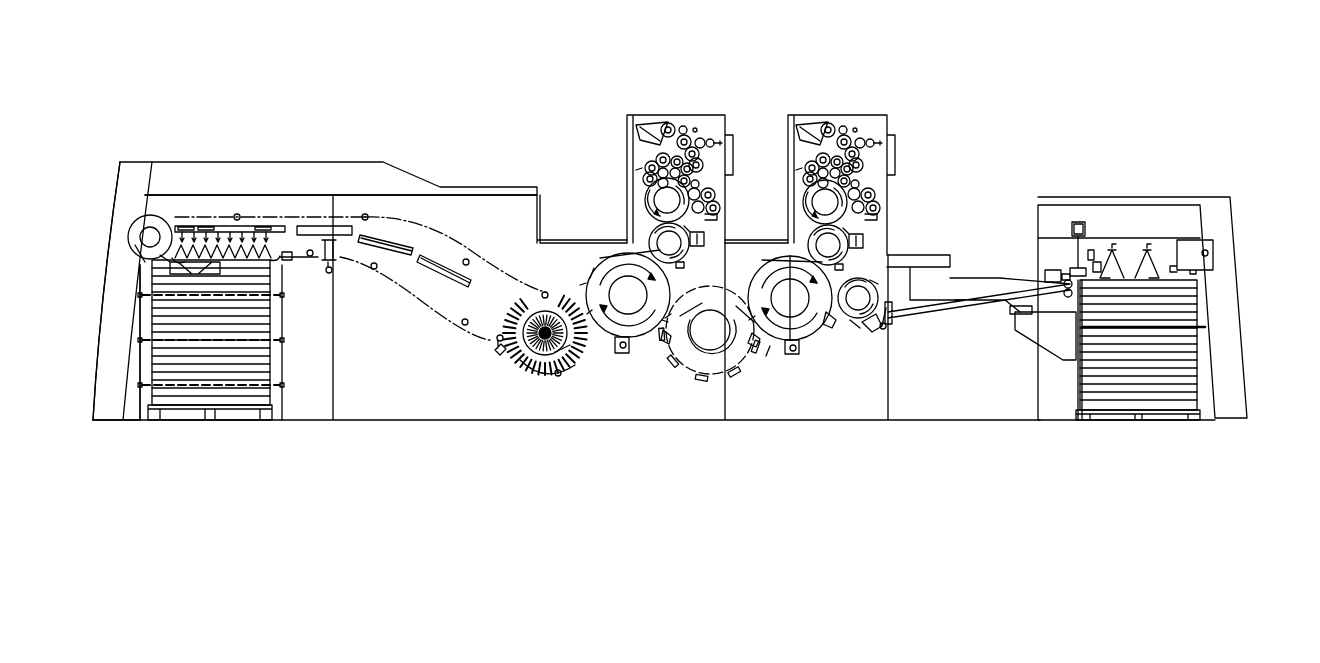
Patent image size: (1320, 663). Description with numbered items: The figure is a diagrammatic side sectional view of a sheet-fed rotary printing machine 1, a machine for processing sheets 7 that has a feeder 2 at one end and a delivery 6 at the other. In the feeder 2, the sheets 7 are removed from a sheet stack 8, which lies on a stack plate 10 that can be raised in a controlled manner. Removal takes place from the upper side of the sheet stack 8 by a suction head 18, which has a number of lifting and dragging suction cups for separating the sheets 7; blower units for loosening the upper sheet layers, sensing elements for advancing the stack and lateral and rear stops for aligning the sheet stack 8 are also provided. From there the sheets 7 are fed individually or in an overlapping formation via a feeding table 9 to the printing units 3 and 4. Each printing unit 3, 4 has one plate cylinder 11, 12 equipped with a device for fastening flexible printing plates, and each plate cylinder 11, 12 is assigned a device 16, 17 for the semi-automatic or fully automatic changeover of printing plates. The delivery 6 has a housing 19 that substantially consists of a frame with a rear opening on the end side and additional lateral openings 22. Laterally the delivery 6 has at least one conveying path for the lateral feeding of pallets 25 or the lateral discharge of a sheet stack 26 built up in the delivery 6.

The printing machine 1 is at (497, 86).
The feeder 2 is at (1133, 173).
The printing unit 3 is at (826, 101).
The printing unit 4 is at (670, 101).
The delivery 6 is at (218, 153).
The sheets 7 is at (1016, 300).
The sheet stack 8 is at (1118, 378).
The feeding table 9 is at (958, 320).
The stack plate 10 is at (1170, 414).
The plate cylinder 11 is at (820, 208).
The plate cylinder 12 is at (668, 203).
The device for changeover of printing plates 16 is at (813, 152).
The device for changeover of printing plates 17 is at (627, 135).
The suction head 18 is at (1215, 240).
The housing 19 is at (288, 178).
The lateral openings 22 is at (150, 367).
The pallets 25 is at (268, 410).
The sheet stack 26 is at (205, 372).